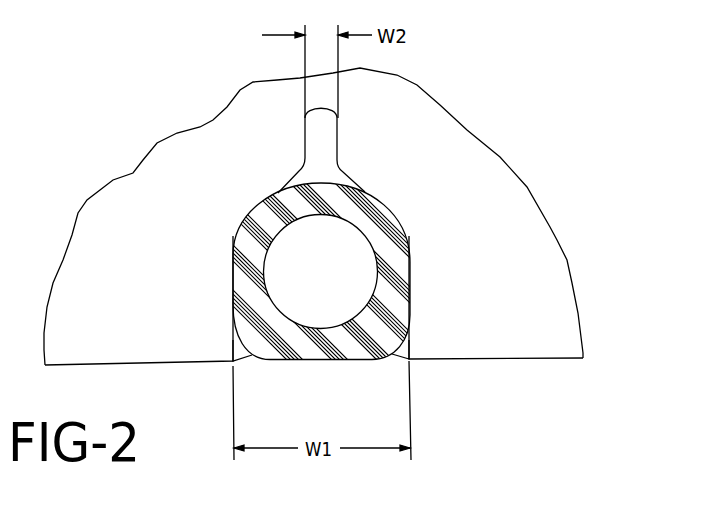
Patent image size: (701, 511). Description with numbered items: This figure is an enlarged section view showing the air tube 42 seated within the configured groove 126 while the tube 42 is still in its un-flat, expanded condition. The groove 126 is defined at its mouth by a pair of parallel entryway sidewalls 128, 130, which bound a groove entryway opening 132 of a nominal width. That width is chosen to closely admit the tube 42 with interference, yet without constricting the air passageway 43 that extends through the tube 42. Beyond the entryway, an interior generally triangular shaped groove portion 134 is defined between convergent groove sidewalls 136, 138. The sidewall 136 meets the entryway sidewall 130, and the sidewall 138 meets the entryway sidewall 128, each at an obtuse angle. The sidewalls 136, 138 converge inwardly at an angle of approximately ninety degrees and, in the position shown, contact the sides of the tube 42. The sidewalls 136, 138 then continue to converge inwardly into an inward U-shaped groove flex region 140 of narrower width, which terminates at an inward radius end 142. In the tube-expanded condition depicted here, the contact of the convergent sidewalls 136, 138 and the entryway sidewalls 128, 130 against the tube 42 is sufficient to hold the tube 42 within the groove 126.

The tube 42 is at (383, 240).
The air passageway 43 is at (307, 250).
The groove 126 is at (257, 348).
The entryway sidewall 128 is at (405, 346).
The entryway sidewall 130 is at (237, 348).
The groove entryway opening 132 is at (387, 348).
The interior generally triangular shaped groove portion 134 is at (313, 167).
The convergent groove sidewall 136 is at (347, 168).
The convergent groove sidewall 138 is at (295, 178).
The U-shaped groove flex region 140 is at (318, 128).
The inward radius end 142 is at (342, 135).